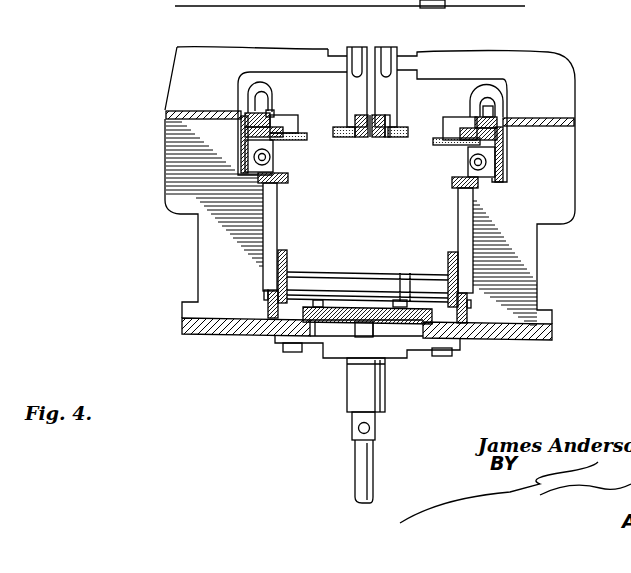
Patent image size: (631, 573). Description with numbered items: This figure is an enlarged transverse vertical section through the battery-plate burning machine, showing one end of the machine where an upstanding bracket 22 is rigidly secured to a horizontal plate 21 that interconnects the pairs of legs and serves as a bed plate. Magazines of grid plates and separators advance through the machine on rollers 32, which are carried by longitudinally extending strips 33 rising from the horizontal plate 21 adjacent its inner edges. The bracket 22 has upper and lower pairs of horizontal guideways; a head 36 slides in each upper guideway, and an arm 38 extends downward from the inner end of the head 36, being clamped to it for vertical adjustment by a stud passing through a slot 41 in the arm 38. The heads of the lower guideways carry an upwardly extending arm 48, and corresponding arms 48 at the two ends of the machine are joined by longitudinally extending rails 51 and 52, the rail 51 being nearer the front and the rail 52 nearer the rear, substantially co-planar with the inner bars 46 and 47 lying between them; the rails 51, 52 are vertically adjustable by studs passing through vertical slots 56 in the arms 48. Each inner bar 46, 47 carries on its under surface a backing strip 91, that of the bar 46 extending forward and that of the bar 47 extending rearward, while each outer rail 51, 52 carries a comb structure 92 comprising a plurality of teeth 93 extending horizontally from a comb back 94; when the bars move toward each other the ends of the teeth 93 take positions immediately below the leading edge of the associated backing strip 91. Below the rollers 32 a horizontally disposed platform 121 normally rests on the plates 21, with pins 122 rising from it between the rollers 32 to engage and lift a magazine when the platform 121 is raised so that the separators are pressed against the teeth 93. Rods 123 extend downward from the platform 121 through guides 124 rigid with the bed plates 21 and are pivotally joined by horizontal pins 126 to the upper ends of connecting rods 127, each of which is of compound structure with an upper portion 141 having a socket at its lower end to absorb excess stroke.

The horizontal plate 21 is at (553, 328).
The upstanding bracket 22 is at (562, 143).
The roller 32 is at (367, 280).
The longitudinally extending strip 33 is at (452, 260).
The head 36 is at (332, 53).
The arm 38 is at (370, 50).
The slot 41 is at (357, 50).
The bar 46 is at (355, 117).
The bar 47 is at (385, 117).
The upwardly extending arm 48 is at (490, 92).
The rail 51 is at (272, 115).
The rail 52 is at (475, 125).
The vertical slot 56 is at (493, 105).
The backing strip 91 is at (376, 143).
The comb structure 92 is at (463, 140).
The teeth 93 is at (440, 142).
The comb back 94 is at (260, 154).
The platform 121 is at (329, 322).
The pin 122 is at (323, 300).
The rod 123 is at (363, 330).
The guide 124 is at (357, 380).
The horizontally disposed pin 126 is at (370, 427).
The connecting rod 127 is at (357, 451).
The upper portion 141 is at (357, 472).